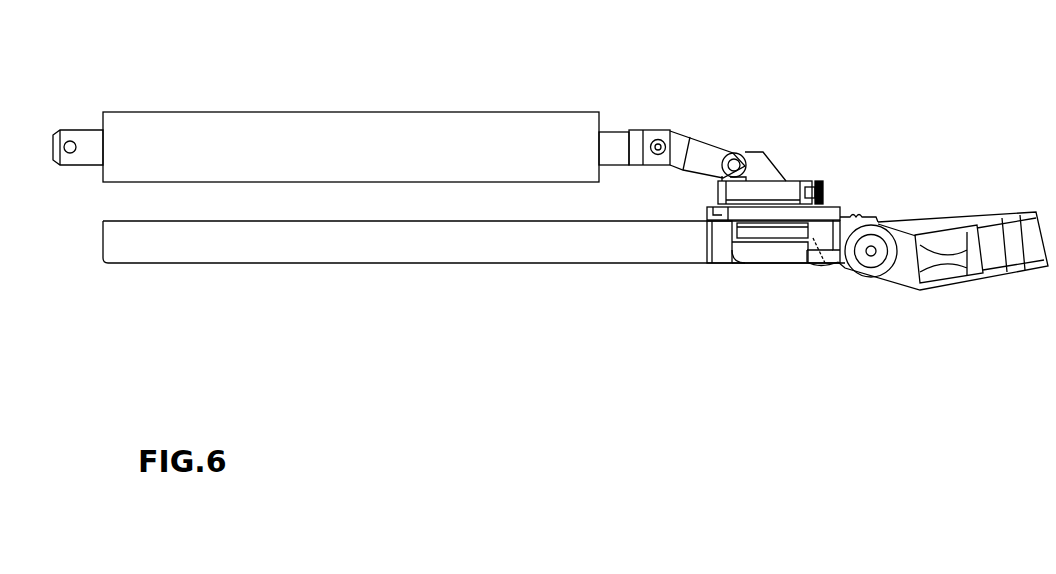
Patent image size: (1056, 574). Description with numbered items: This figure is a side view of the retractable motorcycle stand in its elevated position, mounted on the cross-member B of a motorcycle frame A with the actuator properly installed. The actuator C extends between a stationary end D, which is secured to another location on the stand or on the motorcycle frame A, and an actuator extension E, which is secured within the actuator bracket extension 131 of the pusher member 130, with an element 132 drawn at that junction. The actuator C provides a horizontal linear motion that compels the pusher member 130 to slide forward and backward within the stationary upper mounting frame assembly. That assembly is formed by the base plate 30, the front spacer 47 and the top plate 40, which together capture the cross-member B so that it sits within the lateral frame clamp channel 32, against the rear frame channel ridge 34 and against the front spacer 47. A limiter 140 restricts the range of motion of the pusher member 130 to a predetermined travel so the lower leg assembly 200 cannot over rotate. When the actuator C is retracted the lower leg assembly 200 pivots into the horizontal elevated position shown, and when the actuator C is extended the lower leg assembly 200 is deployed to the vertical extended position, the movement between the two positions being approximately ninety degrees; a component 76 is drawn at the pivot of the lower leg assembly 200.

The stationary end D is at (82, 137).
The actuator C is at (350, 135).
The actuator extension E is at (645, 133).
The pivot pin 132 is at (736, 152).
The actuator bracket extension 131 is at (770, 173).
The pusher member 130 is at (786, 190).
The limiter 140 is at (823, 190).
The top plate 40 is at (838, 210).
The motorcycle frame A is at (313, 250).
The front spacer 47 is at (722, 235).
The base plate 30 is at (757, 250).
The cross-member B is at (797, 233).
The lateral frame clamp channel 32 is at (777, 264).
The rear frame channel ridge 34 is at (812, 234).
The pivot joint 76 is at (888, 238).
The lower leg assembly 200 is at (948, 256).